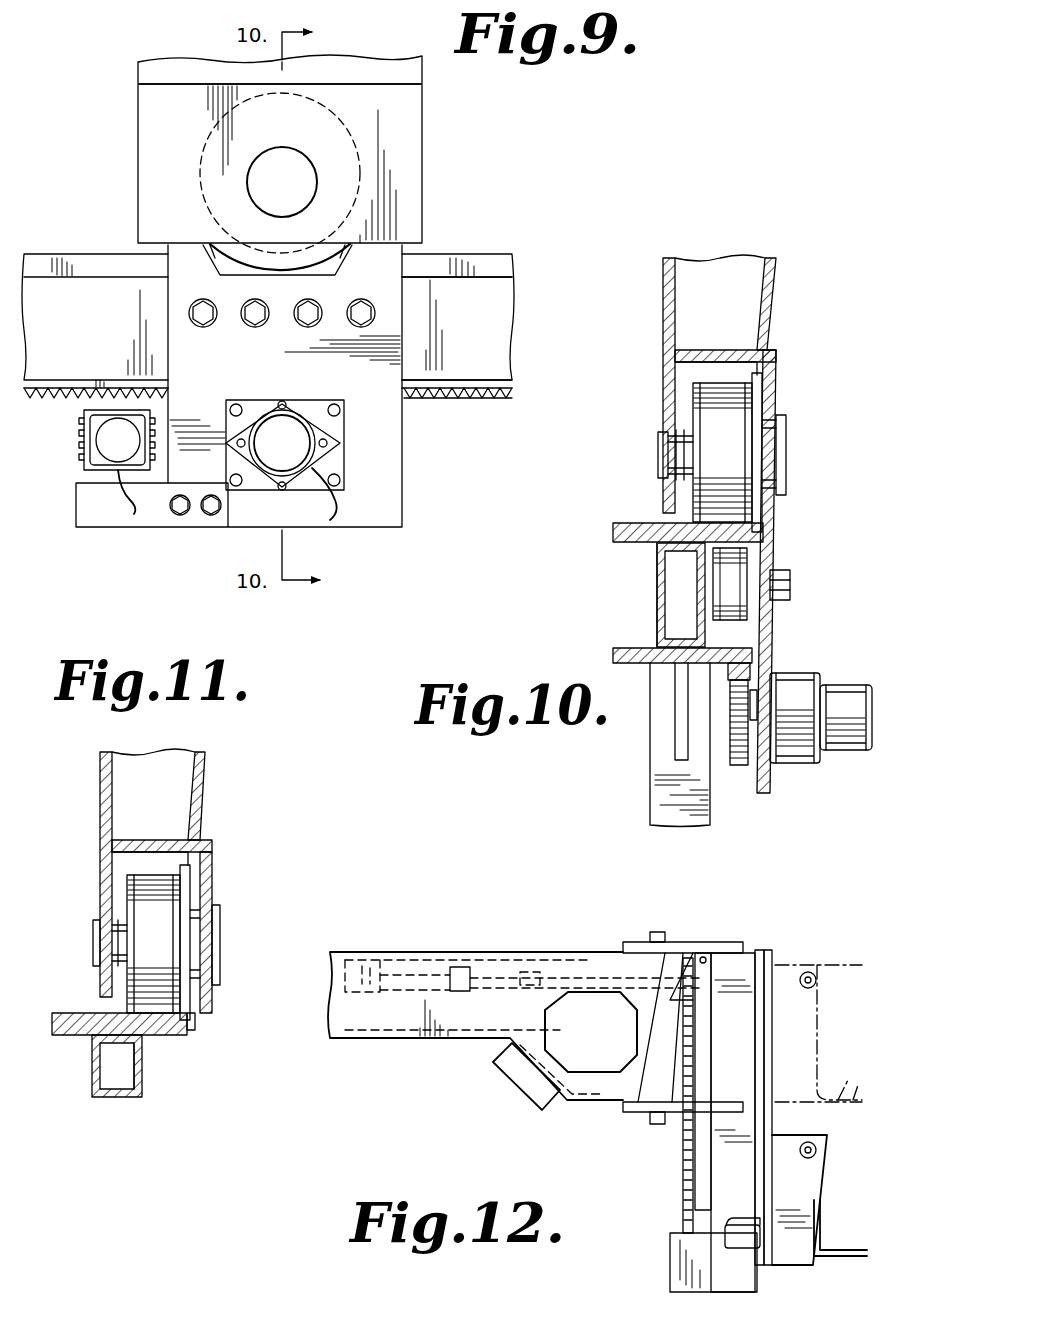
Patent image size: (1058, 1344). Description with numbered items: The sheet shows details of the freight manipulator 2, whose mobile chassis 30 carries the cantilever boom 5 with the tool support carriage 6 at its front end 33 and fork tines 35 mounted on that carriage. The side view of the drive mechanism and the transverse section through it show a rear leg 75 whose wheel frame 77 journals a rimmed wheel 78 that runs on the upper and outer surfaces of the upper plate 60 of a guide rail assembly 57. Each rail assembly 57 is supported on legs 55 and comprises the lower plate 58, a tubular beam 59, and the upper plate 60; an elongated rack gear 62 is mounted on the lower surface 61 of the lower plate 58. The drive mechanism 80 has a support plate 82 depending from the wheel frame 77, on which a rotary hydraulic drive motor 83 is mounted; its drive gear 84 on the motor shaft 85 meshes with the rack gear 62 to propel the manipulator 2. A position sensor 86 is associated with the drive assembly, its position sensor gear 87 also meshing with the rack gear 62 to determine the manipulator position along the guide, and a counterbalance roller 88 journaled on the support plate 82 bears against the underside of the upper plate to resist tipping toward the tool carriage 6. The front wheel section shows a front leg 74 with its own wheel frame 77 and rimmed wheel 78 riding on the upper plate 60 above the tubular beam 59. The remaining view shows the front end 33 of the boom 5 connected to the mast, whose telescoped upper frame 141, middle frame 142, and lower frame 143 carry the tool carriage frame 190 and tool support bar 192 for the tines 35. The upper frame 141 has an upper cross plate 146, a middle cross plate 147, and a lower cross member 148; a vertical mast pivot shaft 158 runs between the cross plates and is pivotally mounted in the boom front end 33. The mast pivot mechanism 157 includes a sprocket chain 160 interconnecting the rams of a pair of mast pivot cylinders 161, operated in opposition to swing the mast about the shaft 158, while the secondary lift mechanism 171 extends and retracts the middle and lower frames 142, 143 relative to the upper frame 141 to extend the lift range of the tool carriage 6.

In FIG. 9, the freight manipulator 2 is at (134, 72).
In FIG. 12, the freight manipulator 2 is at (350, 950).
In FIG. 12, the cantilever boom 5 is at (358, 1040).
In FIG. 12, the tool support carriage 6 is at (824, 966).
In FIG. 9, the mobile chassis 30 is at (176, 55).
In FIG. 10, the mobile chassis 30 is at (722, 258).
In FIG. 11, the mobile chassis 30 is at (98, 752).
In FIG. 12, the front end of the boom 33 is at (490, 1020).
In FIG. 12, the fork tines 35 is at (856, 1254).
In FIG. 10, the legs 55 is at (660, 798).
In FIG. 9, the guide rail assembly 57 is at (82, 252).
In FIG. 10, the guide rail assembly 57 is at (654, 566).
In FIG. 11, the guide rail assembly 57 is at (140, 1100).
In FIG. 9, the lower plate 58 is at (508, 384).
In FIG. 10, the lower plate 58 is at (628, 648).
In FIG. 9, the tubular beam 59 is at (498, 330).
In FIG. 10, the tubular beam 59 is at (657, 596).
In FIG. 11, the tubular beam 59 is at (92, 1080).
In FIG. 9, the upper plate 60 is at (492, 262).
In FIG. 10, the upper plate 60 is at (628, 524).
In FIG. 11, the upper plate 60 is at (72, 1014).
In FIG. 10, the lower surface 61 is at (684, 680).
In FIG. 9, the rack gear 62 is at (512, 404).
In FIG. 10, the rack gear 62 is at (752, 672).
In FIG. 11, the front leg 74 is at (206, 778).
In FIG. 9, the rear leg 75 is at (408, 73).
In FIG. 10, the rear leg 75 is at (768, 302).
In FIG. 9, the wheel frame 77 is at (411, 158).
In FIG. 10, the wheel frame 77 is at (668, 385).
In FIG. 11, the wheel frame 77 is at (212, 875).
In FIG. 9, the rimmed wheel 78 is at (303, 256).
In FIG. 10, the rimmed wheel 78 is at (738, 420).
In FIG. 11, the rimmed wheel 78 is at (130, 897).
In FIG. 9, the drive mechanism 80 is at (332, 462).
In FIG. 10, the drive mechanism 80 is at (852, 760).
In FIG. 9, the drive mechanism support plate 82 is at (392, 435).
In FIG. 10, the drive mechanism support plate 82 is at (768, 793).
In FIG. 9, the manipulator drive motor 83 is at (294, 453).
In FIG. 10, the manipulator drive motor 83 is at (846, 686).
In FIG. 10, the drive gear 84 is at (740, 768).
In FIG. 10, the motor shaft 85 is at (752, 702).
In FIG. 9, the position sensor 86 is at (104, 447).
In FIG. 9, the position sensor gear 87 is at (80, 421).
In FIG. 10, the counterbalance roller 88 is at (745, 622).
In FIG. 12, the upper frame 141 is at (736, 1025).
In FIG. 12, the middle frame 142 is at (765, 1055).
In FIG. 12, the lower frame 143 is at (776, 1118).
In FIG. 12, the upper cross plate 146 is at (700, 942).
In FIG. 12, the middle cross plate 147 is at (632, 1112).
In FIG. 12, the lower cross member 148 is at (674, 1236).
In FIG. 12, the mast pivot mechanism 157 is at (458, 962).
In FIG. 12, the mast pivot shaft 158 is at (664, 1035).
In FIG. 12, the sprocket chain 160 is at (568, 962).
In FIG. 12, the mast pivot cylinders 161 is at (412, 988).
In FIG. 12, the secondary lift mechanism 171 is at (704, 1173).
In FIG. 12, the tool carriage frame 190 is at (806, 1270).
In FIG. 12, the tool support bar 192 is at (816, 1151).